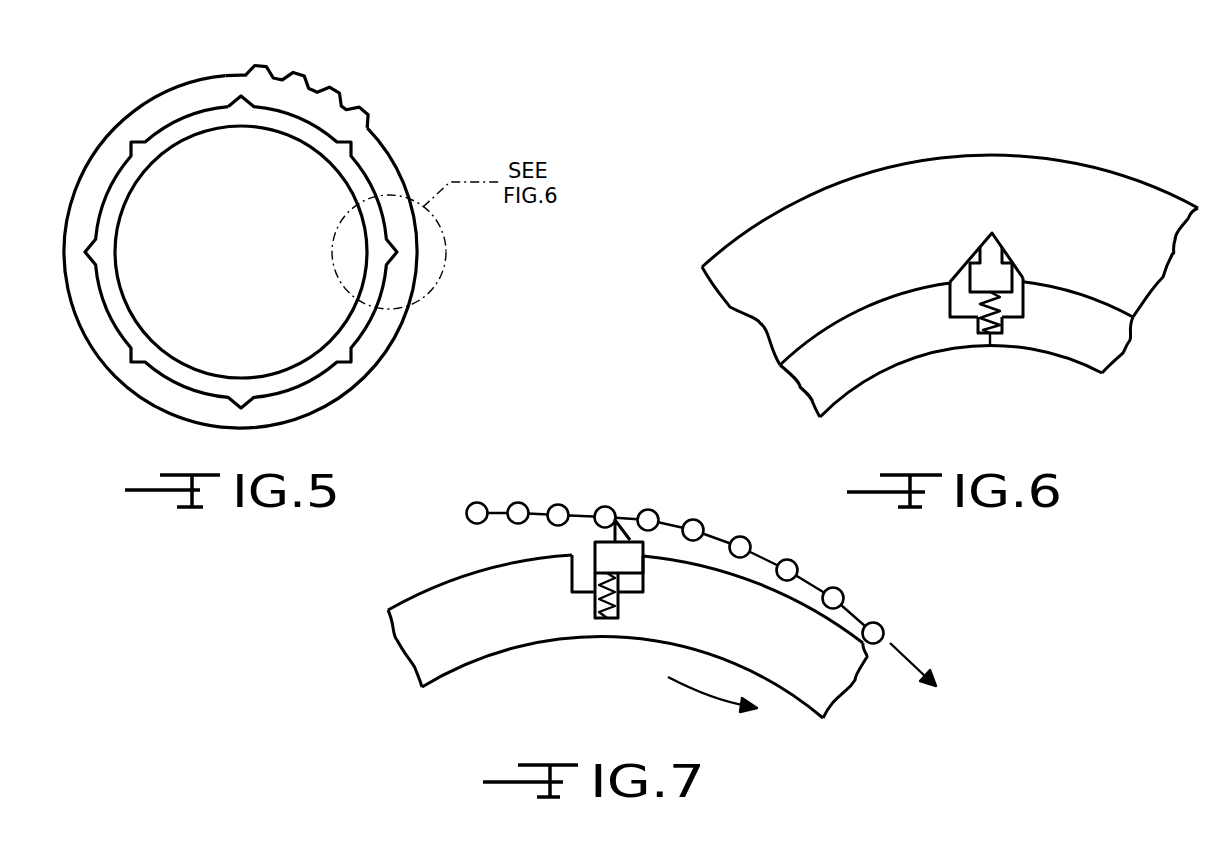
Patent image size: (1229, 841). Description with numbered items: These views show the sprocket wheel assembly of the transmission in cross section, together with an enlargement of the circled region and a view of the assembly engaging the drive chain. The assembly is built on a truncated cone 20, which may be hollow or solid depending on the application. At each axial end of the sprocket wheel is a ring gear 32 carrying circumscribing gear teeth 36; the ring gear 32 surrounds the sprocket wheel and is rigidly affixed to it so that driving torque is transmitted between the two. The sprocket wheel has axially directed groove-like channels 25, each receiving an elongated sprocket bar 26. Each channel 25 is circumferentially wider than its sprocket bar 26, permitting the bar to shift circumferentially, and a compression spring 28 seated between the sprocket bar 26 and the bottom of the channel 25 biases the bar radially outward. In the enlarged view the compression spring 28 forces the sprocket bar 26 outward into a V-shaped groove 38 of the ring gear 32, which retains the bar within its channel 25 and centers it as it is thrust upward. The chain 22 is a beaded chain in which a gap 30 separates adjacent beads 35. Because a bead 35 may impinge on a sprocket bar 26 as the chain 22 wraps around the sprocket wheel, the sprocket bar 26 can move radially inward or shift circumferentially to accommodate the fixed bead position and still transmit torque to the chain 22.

In FIG. 6, the truncated cone 20 is at (1045, 337).
In FIG. 7, the truncated cone 20 is at (492, 640).
In FIG. 7, the chain 22 is at (481, 504).
In FIG. 6, the channel 25 is at (948, 300).
In FIG. 7, the channel 25 is at (570, 572).
In FIG. 6, the sprocket bar 26 is at (998, 277).
In FIG. 7, the sprocket bar 26 is at (628, 558).
In FIG. 6, the compression spring 28 is at (990, 340).
In FIG. 7, the compression spring 28 is at (618, 600).
In FIG. 7, the gap 30 is at (539, 512).
In FIG. 5, the ring gear 32 is at (388, 145).
In FIG. 6, the ring gear 32 is at (840, 180).
In FIG. 7, the bead 35 is at (517, 523).
In FIG. 5, the gear teeth 36 is at (333, 86).
In FIG. 6, the V-shaped groove 38 is at (962, 262).